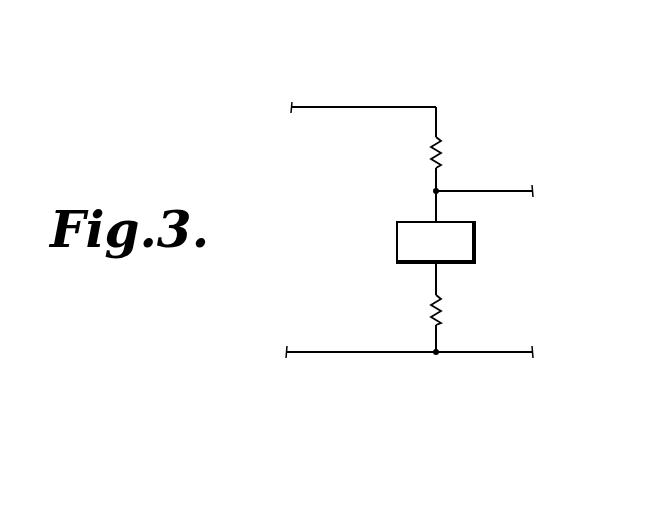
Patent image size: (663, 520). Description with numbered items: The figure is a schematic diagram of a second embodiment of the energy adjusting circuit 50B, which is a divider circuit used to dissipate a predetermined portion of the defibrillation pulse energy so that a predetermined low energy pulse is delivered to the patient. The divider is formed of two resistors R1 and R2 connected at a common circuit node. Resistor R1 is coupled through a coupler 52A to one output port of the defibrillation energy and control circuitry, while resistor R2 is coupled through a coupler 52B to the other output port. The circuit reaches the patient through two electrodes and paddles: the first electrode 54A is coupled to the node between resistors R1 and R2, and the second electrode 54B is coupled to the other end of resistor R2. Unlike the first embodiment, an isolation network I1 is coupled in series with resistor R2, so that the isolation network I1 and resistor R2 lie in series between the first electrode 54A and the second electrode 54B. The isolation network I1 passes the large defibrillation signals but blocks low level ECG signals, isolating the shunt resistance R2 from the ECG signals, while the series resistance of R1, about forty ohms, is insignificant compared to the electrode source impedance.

The energy adjusting circuit 50B is at (500, 86).
The coupler 52A is at (366, 107).
The coupler 52B is at (357, 352).
The first electrode 54A is at (477, 191).
The second electrode 54B is at (477, 352).
The resistor R1 is at (428, 148).
The resistor R2 is at (430, 312).
The isolation network I1 is at (478, 240).